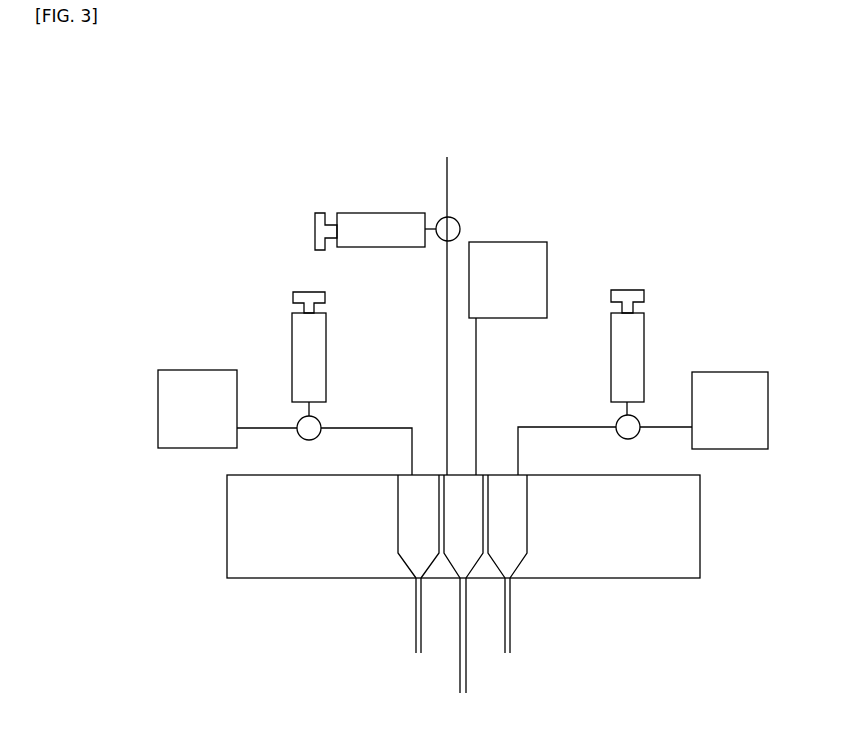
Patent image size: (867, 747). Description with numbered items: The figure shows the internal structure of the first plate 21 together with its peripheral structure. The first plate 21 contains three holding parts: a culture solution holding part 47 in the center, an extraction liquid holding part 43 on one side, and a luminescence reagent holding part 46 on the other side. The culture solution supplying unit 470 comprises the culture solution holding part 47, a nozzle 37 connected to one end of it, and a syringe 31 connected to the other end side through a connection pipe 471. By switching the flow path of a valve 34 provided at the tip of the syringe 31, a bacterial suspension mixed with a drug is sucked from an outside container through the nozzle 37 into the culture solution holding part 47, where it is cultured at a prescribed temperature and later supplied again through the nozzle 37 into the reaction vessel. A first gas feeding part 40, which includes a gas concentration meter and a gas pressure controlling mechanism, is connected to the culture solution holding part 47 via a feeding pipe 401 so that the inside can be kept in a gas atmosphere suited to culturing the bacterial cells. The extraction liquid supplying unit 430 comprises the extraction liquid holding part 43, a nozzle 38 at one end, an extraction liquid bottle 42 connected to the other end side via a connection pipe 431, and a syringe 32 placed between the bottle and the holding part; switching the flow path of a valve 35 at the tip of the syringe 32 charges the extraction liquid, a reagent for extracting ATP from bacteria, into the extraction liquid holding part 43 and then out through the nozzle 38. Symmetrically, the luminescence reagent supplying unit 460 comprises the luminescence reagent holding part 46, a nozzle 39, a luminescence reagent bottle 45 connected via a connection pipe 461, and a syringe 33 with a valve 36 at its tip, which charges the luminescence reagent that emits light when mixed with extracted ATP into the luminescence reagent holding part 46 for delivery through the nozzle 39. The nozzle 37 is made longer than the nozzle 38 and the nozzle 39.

The first plate 21 is at (712, 483).
The syringe 31 is at (358, 212).
The syringe 32 is at (322, 370).
The syringe 33 is at (637, 292).
The valve 34 is at (440, 240).
The valve 35 is at (318, 417).
The valve 36 is at (641, 420).
The nozzle 37 is at (467, 667).
The nozzle 38 is at (417, 593).
The nozzle 39 is at (513, 612).
The first gas feeding part 40 is at (507, 242).
The extraction liquid bottle 42 is at (170, 373).
The extraction liquid holding part 43 is at (398, 552).
The luminescence reagent bottle 45 is at (712, 374).
The luminescence reagent holding part 46 is at (528, 553).
The culture solution holding part 47 is at (433, 577).
The feeding pipe 401 is at (477, 365).
The extraction liquid supplying unit 430 is at (255, 313).
The connection pipe 431 is at (263, 425).
The luminescence reagent supplying unit 460 is at (695, 287).
The connection pipe 461 is at (573, 425).
The culture solution supplying unit 470 is at (465, 153).
The connection pipe 471 is at (447, 365).